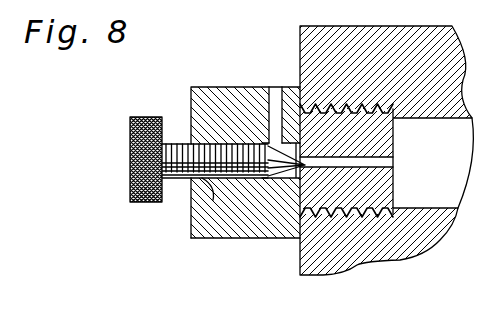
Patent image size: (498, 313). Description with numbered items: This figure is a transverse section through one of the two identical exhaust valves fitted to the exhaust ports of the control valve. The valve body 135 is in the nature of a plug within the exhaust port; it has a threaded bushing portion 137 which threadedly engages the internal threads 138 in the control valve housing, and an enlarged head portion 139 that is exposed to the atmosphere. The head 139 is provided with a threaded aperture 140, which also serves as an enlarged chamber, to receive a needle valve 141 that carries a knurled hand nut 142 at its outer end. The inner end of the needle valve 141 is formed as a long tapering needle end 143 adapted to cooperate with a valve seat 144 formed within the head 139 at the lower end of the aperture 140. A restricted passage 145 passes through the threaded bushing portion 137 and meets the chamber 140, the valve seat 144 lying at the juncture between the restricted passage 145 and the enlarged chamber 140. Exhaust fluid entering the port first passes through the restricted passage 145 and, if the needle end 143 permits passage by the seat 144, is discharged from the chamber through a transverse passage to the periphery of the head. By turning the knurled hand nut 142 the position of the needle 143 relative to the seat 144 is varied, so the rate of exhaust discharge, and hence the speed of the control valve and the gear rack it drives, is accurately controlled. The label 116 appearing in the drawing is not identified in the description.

The slot 116 is at (292, 42).
The valve body 135 is at (208, 266).
The threaded bushing portion 137 is at (393, 195).
The internal threads 138 is at (305, 244).
The enlarged head portion 139 is at (214, 62).
The threaded aperture 140 is at (198, 205).
The needle valve 141 is at (164, 212).
The knurled hand nut 142 is at (100, 118).
The tapering needle end 143 is at (270, 70).
The valve seat 144 is at (393, 173).
The restricted passage 145 is at (393, 161).